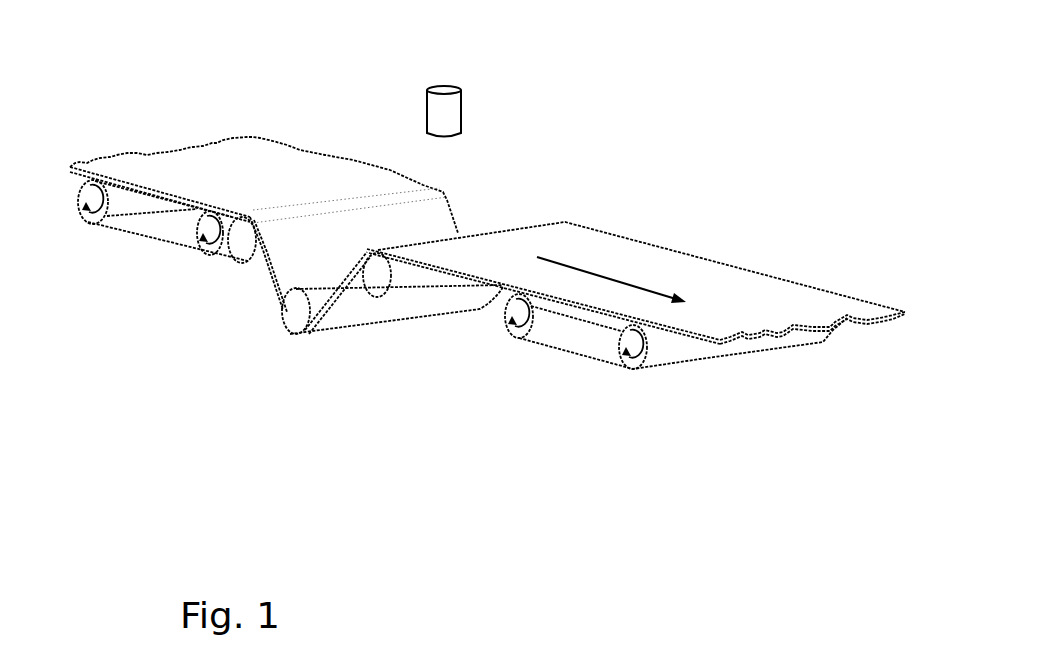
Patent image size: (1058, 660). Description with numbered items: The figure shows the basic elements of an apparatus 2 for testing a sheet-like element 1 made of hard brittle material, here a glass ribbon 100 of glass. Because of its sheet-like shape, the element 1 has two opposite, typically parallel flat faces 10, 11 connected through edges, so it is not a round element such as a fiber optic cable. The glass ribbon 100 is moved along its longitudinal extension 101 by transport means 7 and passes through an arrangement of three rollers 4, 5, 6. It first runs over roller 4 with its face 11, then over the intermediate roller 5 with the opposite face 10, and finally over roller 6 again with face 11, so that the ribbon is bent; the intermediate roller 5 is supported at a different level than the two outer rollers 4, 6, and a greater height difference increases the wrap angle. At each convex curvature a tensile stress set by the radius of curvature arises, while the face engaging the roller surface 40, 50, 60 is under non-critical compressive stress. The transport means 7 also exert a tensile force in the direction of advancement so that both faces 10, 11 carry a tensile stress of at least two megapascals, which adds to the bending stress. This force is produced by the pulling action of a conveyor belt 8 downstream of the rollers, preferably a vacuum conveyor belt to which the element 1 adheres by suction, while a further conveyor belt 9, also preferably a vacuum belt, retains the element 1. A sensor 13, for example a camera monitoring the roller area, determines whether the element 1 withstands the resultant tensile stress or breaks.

The sheet-like element 1 is at (887, 300).
The glass ribbon 100 is at (500, 240).
The apparatus 2 is at (538, 38).
The roller 4 is at (245, 248).
The roller surface 40 is at (250, 262).
The roller 5 is at (290, 312).
The roller 6 is at (372, 290).
The roller surface 60 is at (415, 284).
The transport means 7 is at (605, 384).
The conveyor belt 8 is at (641, 368).
The further conveyor belt 9 is at (127, 235).
The face 10 is at (628, 258).
The longitudinal extension 101 is at (657, 288).
The face 11 is at (465, 302).
The sensor 13 is at (426, 90).
The roller surface 50 is at (318, 294).